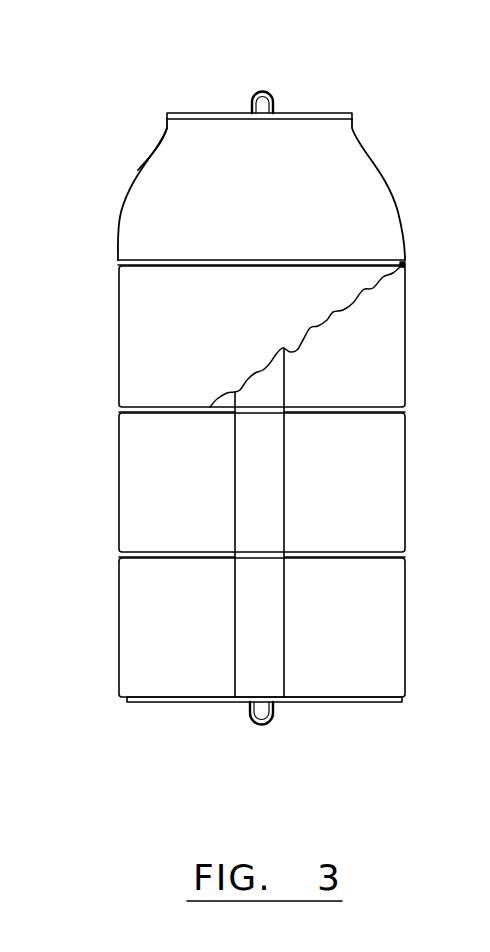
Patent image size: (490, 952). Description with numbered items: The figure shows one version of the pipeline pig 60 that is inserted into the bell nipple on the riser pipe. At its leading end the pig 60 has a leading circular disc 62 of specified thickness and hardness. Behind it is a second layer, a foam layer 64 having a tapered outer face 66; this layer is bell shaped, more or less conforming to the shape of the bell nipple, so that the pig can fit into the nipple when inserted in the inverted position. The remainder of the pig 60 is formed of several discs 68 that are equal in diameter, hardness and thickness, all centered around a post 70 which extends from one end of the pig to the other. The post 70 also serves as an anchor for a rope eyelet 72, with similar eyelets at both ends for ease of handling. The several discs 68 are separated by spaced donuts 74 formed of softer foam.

The pig 60 is at (263, 425).
The leading circular disc 62 is at (199, 113).
The foam layer 64 is at (350, 198).
The tapered outer face 66 is at (155, 152).
The discs 68 is at (405, 264).
The post 70 is at (263, 653).
The rope eyelet 72 is at (265, 92).
The donuts 74 is at (118, 503).